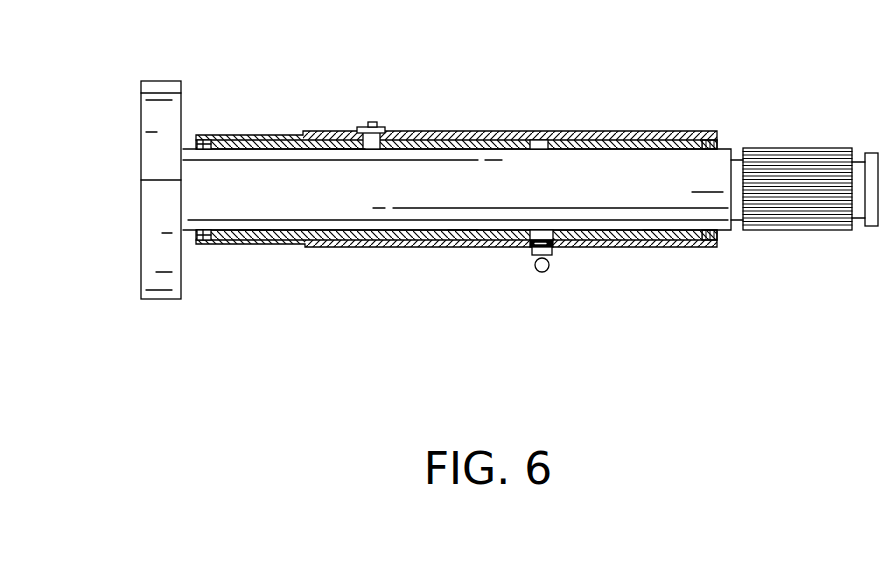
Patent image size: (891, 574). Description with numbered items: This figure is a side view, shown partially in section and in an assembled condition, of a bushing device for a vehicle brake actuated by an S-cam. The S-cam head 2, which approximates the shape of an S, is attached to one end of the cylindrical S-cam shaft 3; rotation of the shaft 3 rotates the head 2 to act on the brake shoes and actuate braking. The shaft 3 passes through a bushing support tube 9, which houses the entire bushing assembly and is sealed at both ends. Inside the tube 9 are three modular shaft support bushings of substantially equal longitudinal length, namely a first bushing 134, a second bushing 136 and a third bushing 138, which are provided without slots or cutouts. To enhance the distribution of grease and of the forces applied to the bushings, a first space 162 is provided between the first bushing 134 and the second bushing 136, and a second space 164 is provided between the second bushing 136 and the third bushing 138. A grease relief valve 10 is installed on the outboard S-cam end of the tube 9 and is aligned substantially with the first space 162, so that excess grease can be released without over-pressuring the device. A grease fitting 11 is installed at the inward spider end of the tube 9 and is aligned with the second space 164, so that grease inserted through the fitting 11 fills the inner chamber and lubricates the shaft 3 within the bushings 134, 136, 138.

The S-cam head 2 is at (158, 282).
The S-cam shaft 3 is at (660, 170).
The bushing support tube 9 is at (472, 133).
The grease relief valve 10 is at (383, 125).
The grease fitting 11 is at (542, 272).
The first space 162 is at (363, 150).
The second space 164 is at (545, 150).
The first bushing 134 is at (242, 227).
The second bushing 136 is at (450, 228).
The third bushing 138 is at (645, 228).